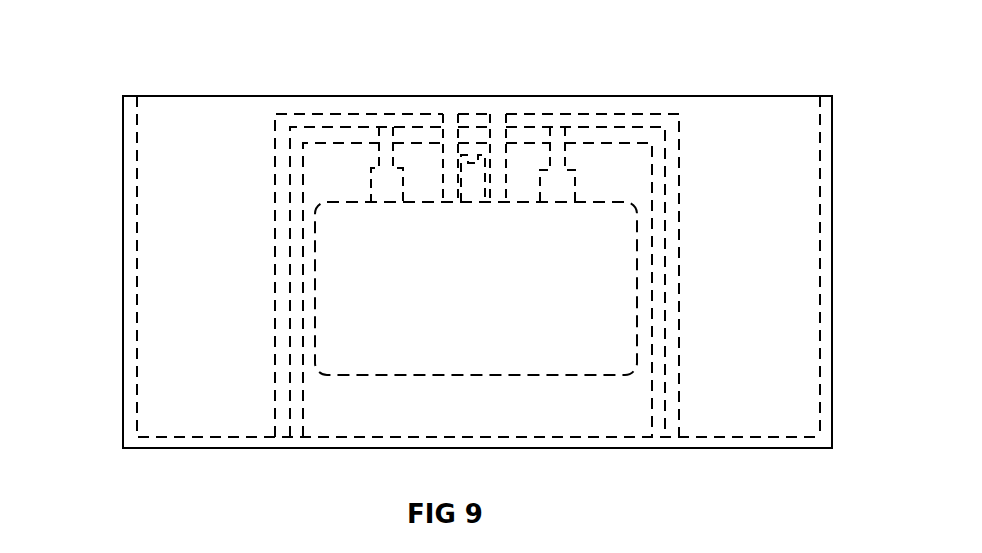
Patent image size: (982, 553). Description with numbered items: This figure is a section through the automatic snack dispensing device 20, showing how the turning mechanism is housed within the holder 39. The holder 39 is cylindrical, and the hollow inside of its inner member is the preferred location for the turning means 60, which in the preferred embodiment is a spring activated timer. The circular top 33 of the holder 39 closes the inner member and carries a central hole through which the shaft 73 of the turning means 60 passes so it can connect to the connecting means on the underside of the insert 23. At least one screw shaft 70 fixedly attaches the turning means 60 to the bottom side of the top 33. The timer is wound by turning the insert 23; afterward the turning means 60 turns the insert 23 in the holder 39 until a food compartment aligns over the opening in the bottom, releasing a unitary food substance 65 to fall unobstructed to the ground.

The automatic snack dispensing device 20 is at (435, 272).
The insert 23 is at (275, 115).
The top 33 is at (333, 128).
The holder 39 is at (180, 425).
The turning means 60 is at (508, 325).
The unitary food substance 65 is at (823, 260).
The screw shaft 70 is at (386, 160).
The shaft 73 is at (472, 158).